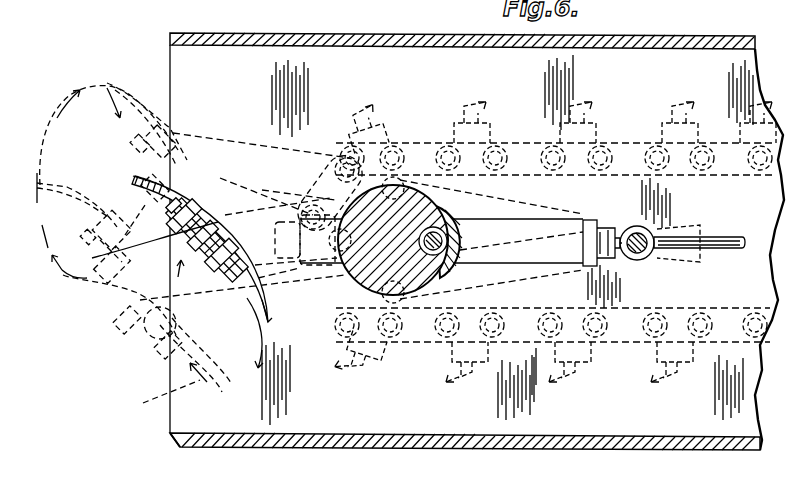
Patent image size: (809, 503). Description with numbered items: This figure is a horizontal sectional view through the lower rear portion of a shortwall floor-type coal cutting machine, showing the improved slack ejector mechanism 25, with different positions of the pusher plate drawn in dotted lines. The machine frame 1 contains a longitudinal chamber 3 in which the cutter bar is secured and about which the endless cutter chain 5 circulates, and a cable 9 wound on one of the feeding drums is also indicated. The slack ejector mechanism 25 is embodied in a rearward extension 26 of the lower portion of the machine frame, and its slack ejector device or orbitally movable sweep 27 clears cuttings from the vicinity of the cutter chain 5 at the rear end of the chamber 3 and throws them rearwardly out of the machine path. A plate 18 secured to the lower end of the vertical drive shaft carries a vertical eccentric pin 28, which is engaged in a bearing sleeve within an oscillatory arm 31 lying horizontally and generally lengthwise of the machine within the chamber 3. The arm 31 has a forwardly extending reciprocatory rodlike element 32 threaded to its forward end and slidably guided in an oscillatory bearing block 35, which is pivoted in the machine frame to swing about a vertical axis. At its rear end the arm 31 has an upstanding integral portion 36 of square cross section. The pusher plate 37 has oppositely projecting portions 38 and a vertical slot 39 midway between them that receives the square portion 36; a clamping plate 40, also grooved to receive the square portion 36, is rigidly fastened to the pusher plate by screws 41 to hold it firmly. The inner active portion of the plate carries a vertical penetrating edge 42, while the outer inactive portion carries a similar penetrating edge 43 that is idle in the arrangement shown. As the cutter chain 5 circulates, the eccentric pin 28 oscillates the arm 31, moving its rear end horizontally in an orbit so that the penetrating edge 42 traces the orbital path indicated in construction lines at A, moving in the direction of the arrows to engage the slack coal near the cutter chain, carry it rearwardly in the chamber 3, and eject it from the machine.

The machine frame 1 is at (570, 448).
The chamber 3 is at (400, 406).
The endless cutter chain 5 is at (492, 104).
The cable 9 is at (345, 7).
The plate 18 is at (412, 186).
The slack ejector mechanism 25 is at (220, 228).
The rearward extension 26 is at (208, 448).
The orbitally movable sweep 27 is at (248, 288).
The eccentric pin 28 is at (444, 240).
The oscillatory arm 31 is at (566, 230).
The reciprocatory rodlike element 32 is at (722, 237).
The oscillatory bearing block 35 is at (652, 236).
The upstanding integral portion 36 is at (203, 216).
The pusher plate 37 is at (202, 190).
The oppositely projecting portions 38 is at (147, 191).
The vertical slot 39 is at (220, 234).
The clamping plate 40 is at (188, 233).
The screws 41 is at (92, 258).
The vertical penetrating edge 42 is at (272, 318).
The penetrating edge 43 is at (133, 184).
The orbital path A is at (167, 386).